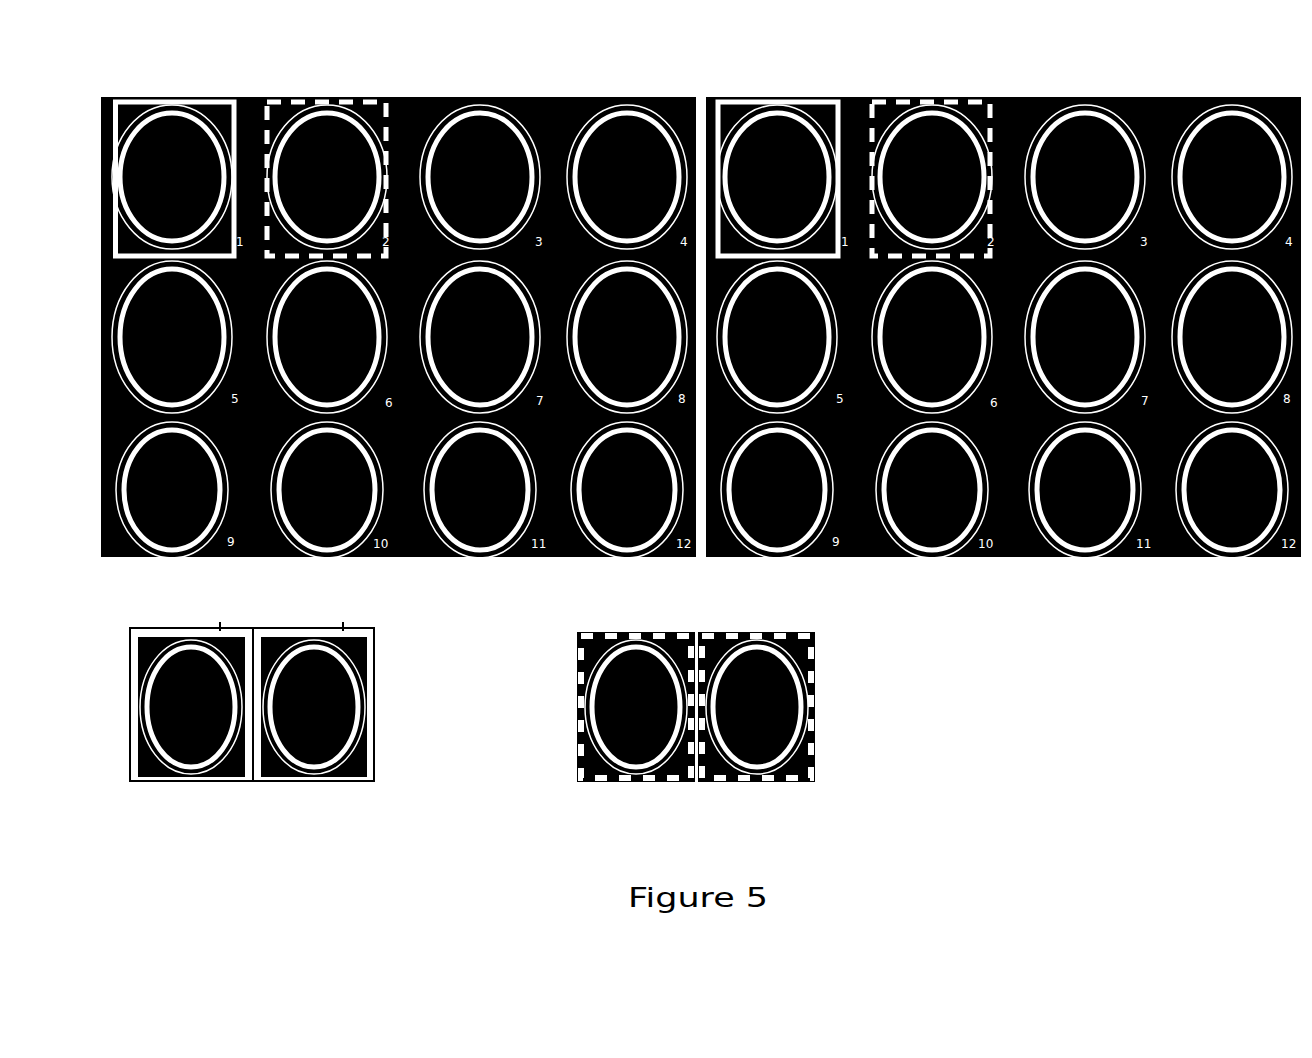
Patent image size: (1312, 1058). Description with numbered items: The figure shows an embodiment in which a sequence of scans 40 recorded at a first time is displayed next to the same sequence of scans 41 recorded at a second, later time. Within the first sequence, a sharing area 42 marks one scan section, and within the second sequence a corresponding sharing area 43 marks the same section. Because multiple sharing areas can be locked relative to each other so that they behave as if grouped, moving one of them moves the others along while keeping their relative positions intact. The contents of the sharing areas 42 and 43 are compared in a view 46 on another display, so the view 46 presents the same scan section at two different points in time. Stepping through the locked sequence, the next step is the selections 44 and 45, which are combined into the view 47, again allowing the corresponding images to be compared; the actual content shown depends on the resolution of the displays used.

The sequence of scans 40 is at (545, 97).
The sequence of scans 41 is at (1147, 97).
The sharing area 42 is at (143, 100).
The sharing area 43 is at (760, 102).
The selection 44 is at (285, 100).
The selection 45 is at (902, 102).
The view 46 is at (374, 672).
The view 47 is at (815, 660).